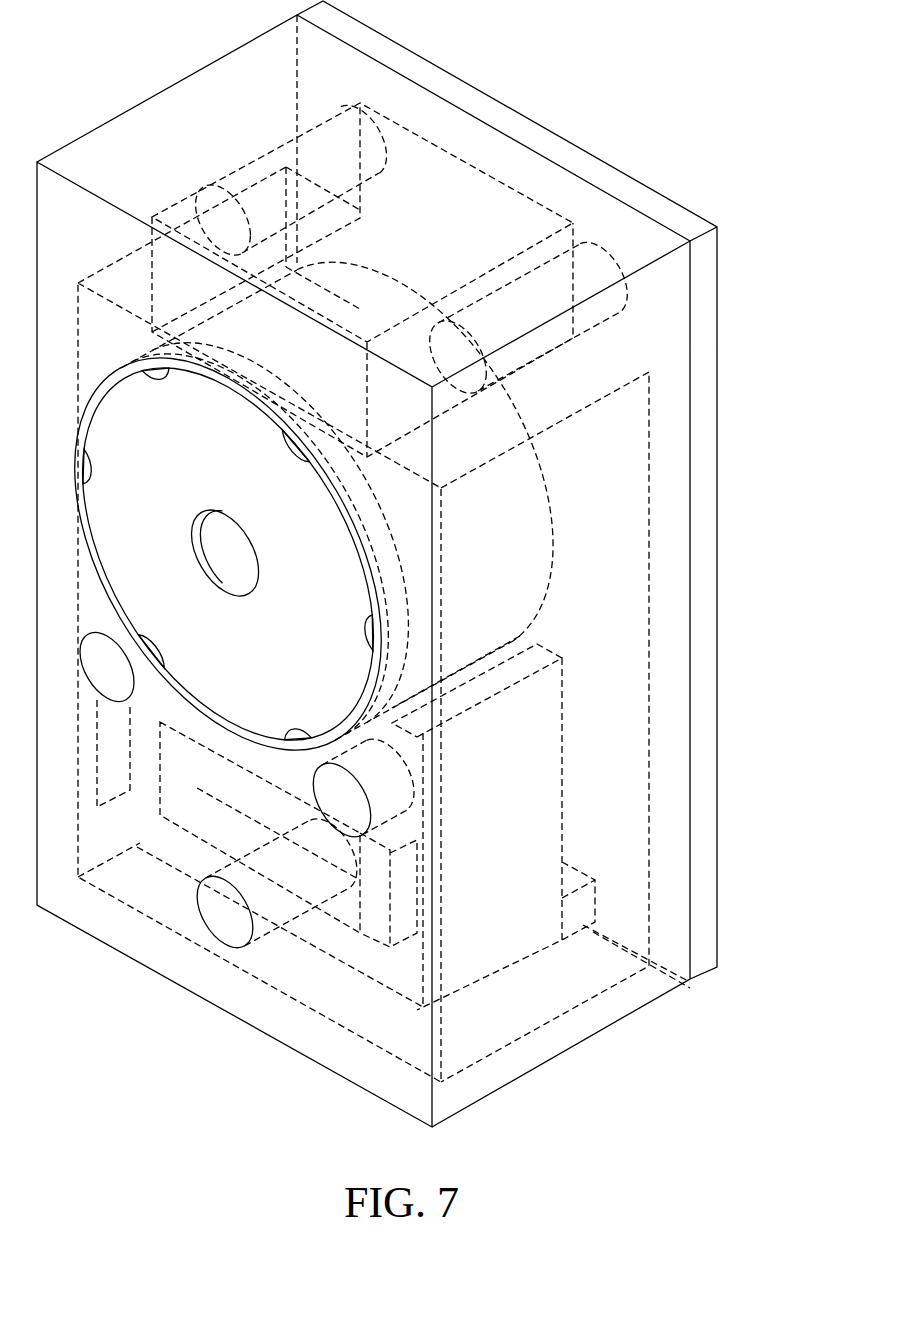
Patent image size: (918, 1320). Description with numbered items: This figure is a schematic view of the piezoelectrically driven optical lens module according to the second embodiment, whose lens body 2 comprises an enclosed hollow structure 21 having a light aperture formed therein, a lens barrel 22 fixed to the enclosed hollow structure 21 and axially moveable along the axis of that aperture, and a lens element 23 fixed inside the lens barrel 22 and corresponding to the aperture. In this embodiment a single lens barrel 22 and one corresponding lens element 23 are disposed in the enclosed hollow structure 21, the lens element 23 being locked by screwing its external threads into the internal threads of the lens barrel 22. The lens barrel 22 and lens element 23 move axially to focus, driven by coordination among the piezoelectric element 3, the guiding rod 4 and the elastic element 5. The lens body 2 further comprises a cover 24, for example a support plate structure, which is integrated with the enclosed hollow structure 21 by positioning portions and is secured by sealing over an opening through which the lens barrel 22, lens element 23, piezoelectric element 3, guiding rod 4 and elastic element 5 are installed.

The lens body 2 is at (449, 520).
The enclosed hollow structure 21 is at (578, 635).
The lens barrel 22 is at (388, 568).
The lens element 23 is at (328, 526).
The cover 24 is at (612, 718).
The piezoelectric element 3 is at (320, 865).
The guiding rod 4 is at (218, 915).
The elastic element 5 is at (512, 783).